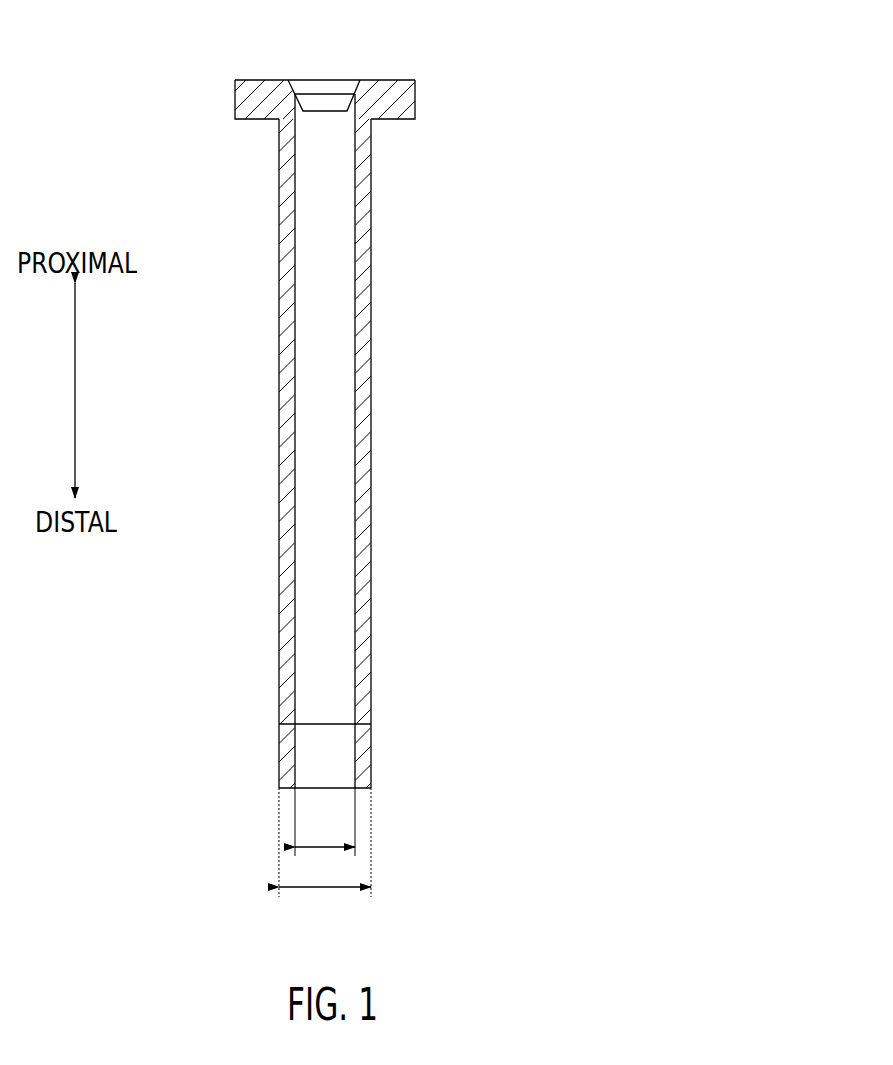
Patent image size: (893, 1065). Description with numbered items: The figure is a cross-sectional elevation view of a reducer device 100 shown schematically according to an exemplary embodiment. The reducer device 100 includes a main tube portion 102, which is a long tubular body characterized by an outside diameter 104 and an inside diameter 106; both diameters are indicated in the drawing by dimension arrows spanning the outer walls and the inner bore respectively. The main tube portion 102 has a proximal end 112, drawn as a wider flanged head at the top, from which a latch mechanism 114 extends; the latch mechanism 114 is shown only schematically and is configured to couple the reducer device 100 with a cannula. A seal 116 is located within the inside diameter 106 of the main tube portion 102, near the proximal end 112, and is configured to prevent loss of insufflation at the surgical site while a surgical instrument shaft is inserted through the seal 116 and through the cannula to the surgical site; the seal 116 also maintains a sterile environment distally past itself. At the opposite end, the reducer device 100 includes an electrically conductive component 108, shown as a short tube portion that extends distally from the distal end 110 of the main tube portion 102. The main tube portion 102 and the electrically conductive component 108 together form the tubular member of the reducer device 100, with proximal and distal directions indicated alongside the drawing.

The reducer device 100 is at (500, 93).
The main tube portion 102 is at (372, 428).
The outside diameter 104 is at (279, 887).
The inside diameter 106 is at (295, 847).
The electrically conductive component 108 is at (372, 760).
The distal end 110 is at (381, 788).
The proximal end 112 is at (222, 71).
The latch mechanism 114 is at (387, 80).
The seal 116 is at (327, 108).